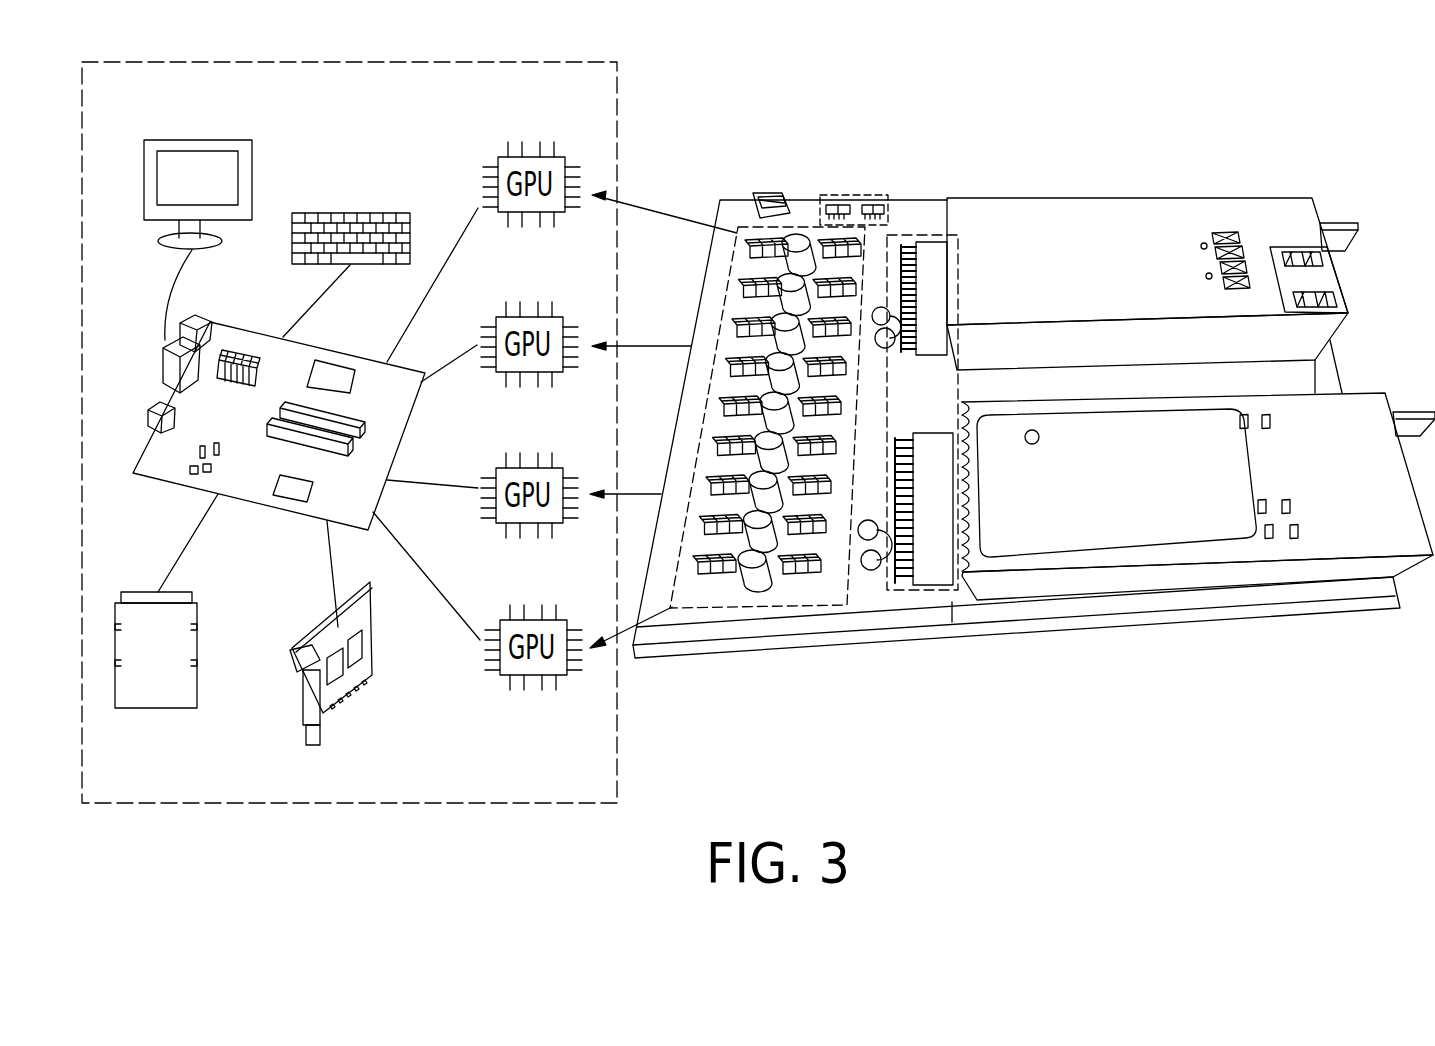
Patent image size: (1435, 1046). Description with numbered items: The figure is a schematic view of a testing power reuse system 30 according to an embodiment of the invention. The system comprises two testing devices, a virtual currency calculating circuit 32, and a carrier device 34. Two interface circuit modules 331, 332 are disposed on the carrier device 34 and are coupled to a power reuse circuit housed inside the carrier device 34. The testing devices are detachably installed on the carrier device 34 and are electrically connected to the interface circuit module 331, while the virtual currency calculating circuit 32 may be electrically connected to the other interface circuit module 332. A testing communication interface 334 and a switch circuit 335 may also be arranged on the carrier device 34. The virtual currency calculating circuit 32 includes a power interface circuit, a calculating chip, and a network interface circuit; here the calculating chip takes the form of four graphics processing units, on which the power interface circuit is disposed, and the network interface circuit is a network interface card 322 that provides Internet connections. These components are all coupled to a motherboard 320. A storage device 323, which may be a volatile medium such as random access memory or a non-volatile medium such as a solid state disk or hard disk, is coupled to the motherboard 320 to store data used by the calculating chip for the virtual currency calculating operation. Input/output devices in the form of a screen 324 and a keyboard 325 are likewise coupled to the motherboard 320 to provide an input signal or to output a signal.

The testing power reuse system 30 is at (1380, 820).
The virtual currency calculating circuit 32 is at (398, 62).
The carrier device 34 is at (925, 213).
The motherboard 320 is at (348, 352).
The network interface card 322 is at (323, 717).
The storage device 323 is at (157, 710).
The screen 324 is at (198, 140).
The keyboard 325 is at (352, 213).
The interface circuit module 331 is at (916, 592).
The interface circuit module 332 is at (713, 608).
The testing communication interface 334 is at (848, 195).
The switch circuit 335 is at (768, 190).